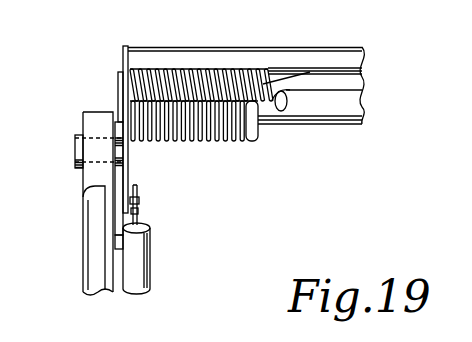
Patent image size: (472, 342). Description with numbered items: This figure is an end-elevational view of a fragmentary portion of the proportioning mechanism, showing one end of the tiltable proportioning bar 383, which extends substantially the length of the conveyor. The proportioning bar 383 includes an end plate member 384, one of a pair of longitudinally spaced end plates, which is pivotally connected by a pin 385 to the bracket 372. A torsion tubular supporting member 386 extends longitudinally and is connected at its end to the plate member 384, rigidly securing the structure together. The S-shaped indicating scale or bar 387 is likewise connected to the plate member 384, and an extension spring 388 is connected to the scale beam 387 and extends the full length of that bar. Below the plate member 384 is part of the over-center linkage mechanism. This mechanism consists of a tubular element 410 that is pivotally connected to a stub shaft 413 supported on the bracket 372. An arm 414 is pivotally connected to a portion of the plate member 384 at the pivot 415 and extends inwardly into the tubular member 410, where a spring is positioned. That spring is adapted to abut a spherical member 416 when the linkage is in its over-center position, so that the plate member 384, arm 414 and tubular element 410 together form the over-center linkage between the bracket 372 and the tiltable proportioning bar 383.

The S-shaped indicating scale bar 387 is at (261, 57).
The tiltable proportioning bar 383 is at (313, 72).
The torsion tubular supporting member 386 is at (287, 94).
The end plate member 384 is at (121, 59).
The extension spring 388 is at (251, 135).
The pin 385 is at (122, 152).
The bracket 372 is at (93, 271).
The stub shaft 413 is at (118, 241).
The pivotal connection 415 is at (138, 194).
The spherical member 416 is at (140, 197).
The arm 414 is at (138, 212).
The tubular element 410 is at (143, 264).